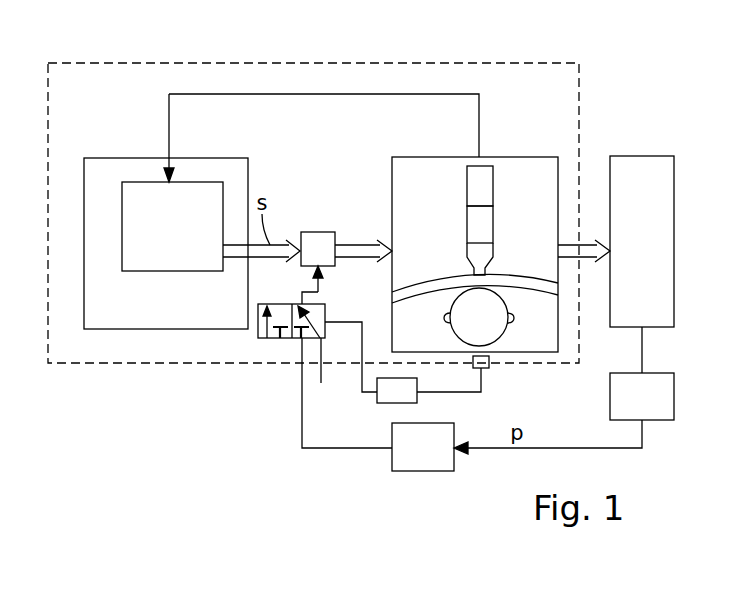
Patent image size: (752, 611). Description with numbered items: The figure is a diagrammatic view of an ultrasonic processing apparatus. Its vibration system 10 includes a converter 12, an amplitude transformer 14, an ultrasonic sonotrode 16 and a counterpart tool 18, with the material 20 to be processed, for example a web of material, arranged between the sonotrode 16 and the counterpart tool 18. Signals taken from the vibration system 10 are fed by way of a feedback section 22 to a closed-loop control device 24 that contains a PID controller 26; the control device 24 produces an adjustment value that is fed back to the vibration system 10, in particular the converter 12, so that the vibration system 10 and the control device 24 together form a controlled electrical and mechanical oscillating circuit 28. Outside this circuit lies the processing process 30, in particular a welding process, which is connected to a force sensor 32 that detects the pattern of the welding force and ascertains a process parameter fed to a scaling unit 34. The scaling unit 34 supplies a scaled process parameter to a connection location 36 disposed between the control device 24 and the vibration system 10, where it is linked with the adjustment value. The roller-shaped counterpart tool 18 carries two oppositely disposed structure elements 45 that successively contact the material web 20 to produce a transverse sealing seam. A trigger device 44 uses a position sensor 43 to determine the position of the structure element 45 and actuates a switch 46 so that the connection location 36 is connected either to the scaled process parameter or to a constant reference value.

The vibration system 10 is at (523, 157).
The converter 12 is at (491, 187).
The amplitude transformer 14 is at (491, 224).
The ultrasonic sonotrode 16 is at (491, 253).
The counterpart tool 18 is at (470, 330).
The material 20 is at (462, 276).
The feedback section 22 is at (291, 94).
The closed-loop control device 24 is at (104, 167).
The PID controller 26 is at (143, 273).
The controlled electrical and mechanical oscillating circuit 28 is at (131, 364).
The processing process 30 is at (642, 241).
The force sensor 32 is at (642, 396).
The scaling unit 34 is at (423, 447).
The connection location 36 is at (318, 232).
The position sensor 43 is at (490, 367).
The trigger device 44 is at (390, 393).
The structure elements 45 is at (444, 317).
The switch 46 is at (267, 340).